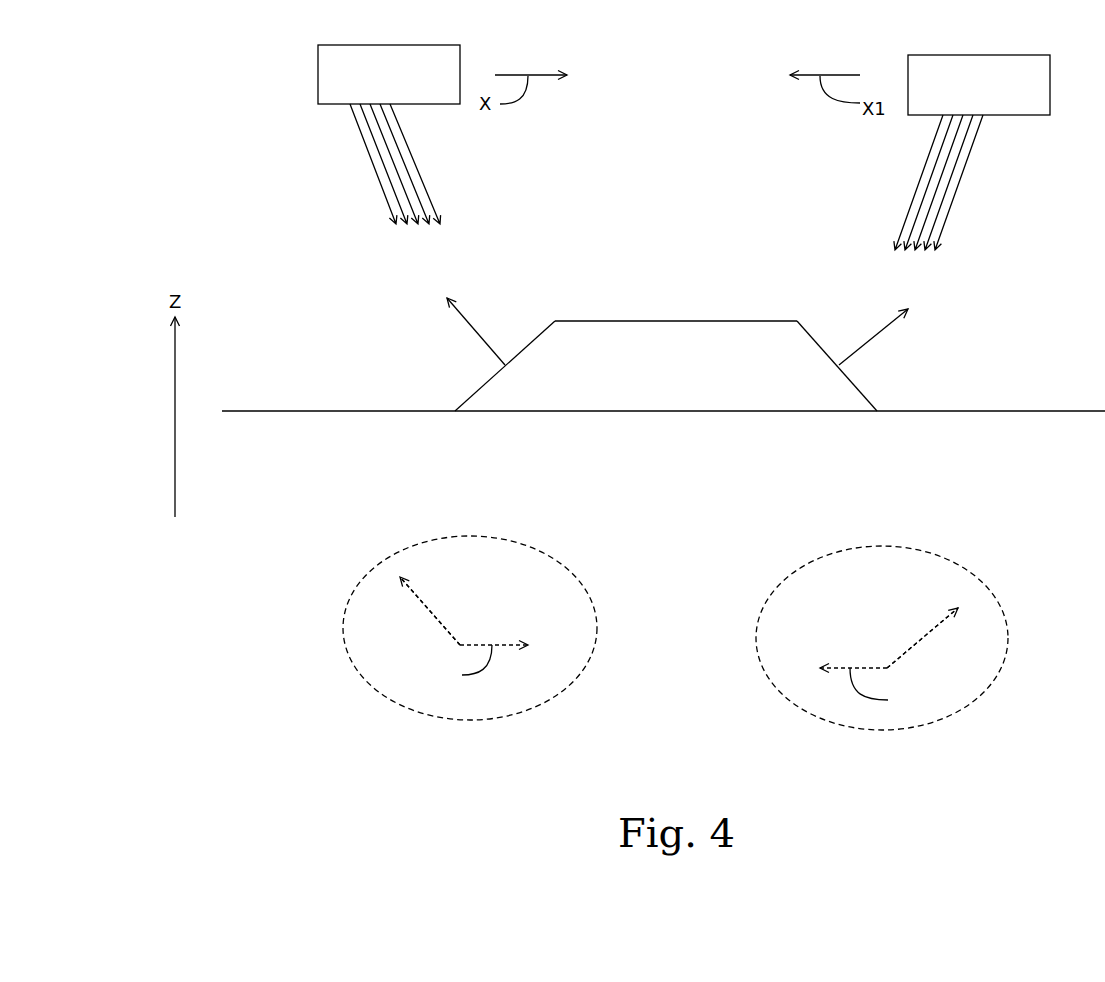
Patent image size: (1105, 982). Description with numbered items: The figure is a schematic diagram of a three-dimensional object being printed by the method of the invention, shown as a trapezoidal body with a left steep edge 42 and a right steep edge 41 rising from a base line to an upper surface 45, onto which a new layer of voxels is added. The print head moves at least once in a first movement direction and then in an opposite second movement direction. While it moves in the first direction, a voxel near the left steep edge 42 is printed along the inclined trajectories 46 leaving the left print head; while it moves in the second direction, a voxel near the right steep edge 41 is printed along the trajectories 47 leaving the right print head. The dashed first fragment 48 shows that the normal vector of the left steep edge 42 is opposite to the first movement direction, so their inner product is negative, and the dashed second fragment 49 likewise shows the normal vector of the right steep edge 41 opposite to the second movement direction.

The right steep edge 41 is at (867, 395).
The left steep edge 42 is at (468, 395).
The upper surface 45 is at (762, 320).
The trajectories 46 is at (385, 193).
The trajectories 47 is at (957, 199).
The first fragment 48 is at (383, 668).
The second fragment 49 is at (815, 699).